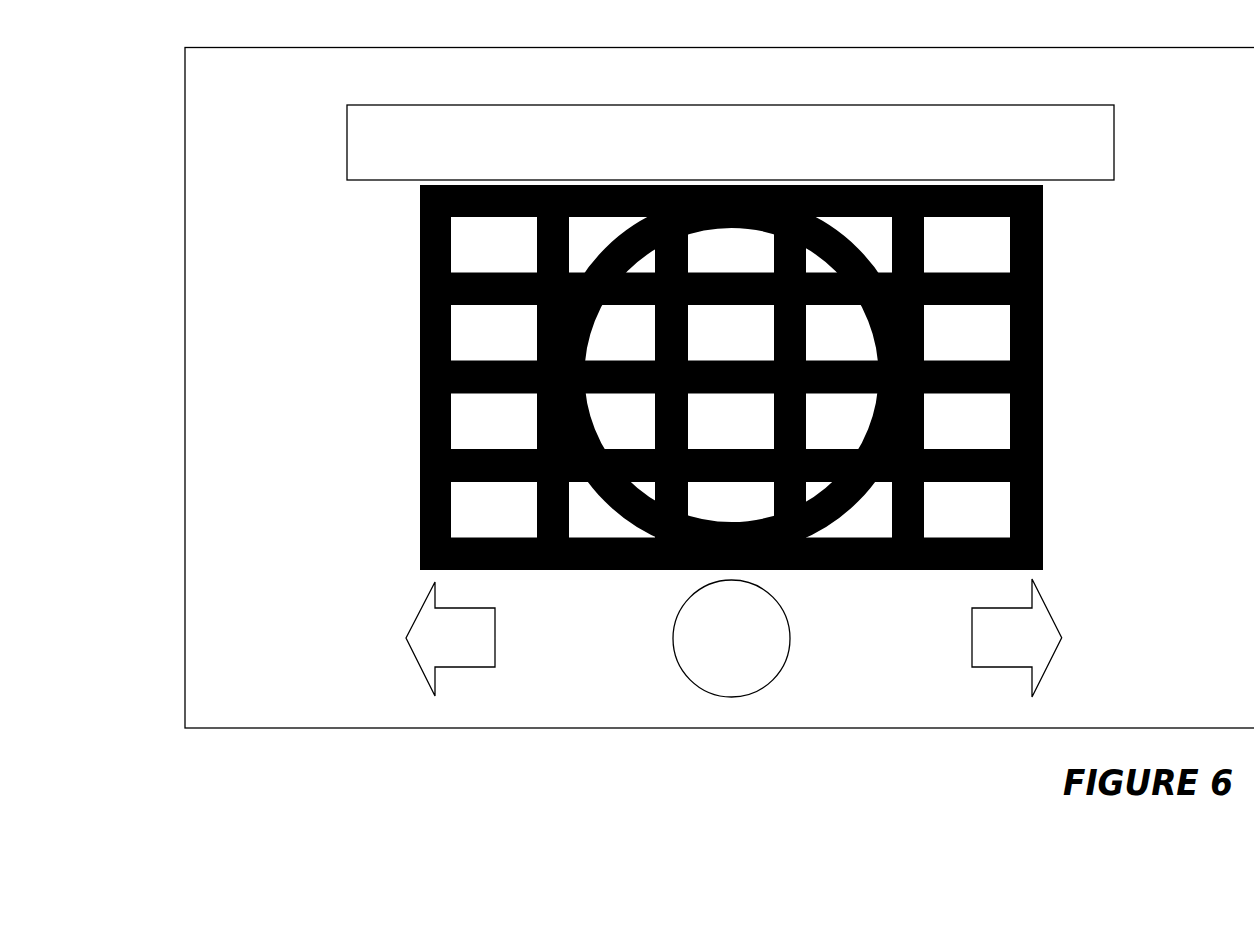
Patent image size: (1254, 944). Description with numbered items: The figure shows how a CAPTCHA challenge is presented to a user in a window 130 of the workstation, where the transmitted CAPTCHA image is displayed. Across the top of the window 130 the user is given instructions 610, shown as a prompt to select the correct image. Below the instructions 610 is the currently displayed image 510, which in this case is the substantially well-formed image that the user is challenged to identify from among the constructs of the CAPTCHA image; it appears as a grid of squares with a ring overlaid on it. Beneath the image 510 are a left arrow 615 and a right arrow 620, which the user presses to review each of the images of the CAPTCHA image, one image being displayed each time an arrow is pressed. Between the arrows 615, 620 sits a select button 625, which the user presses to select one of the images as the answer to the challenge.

The window 130 is at (185, 608).
The instructions 610 is at (347, 163).
The substantially well-formed image 510 is at (420, 358).
The left arrow 615 is at (495, 640).
The right navigation arrow 620 is at (972, 637).
The select button 625 is at (673, 637).